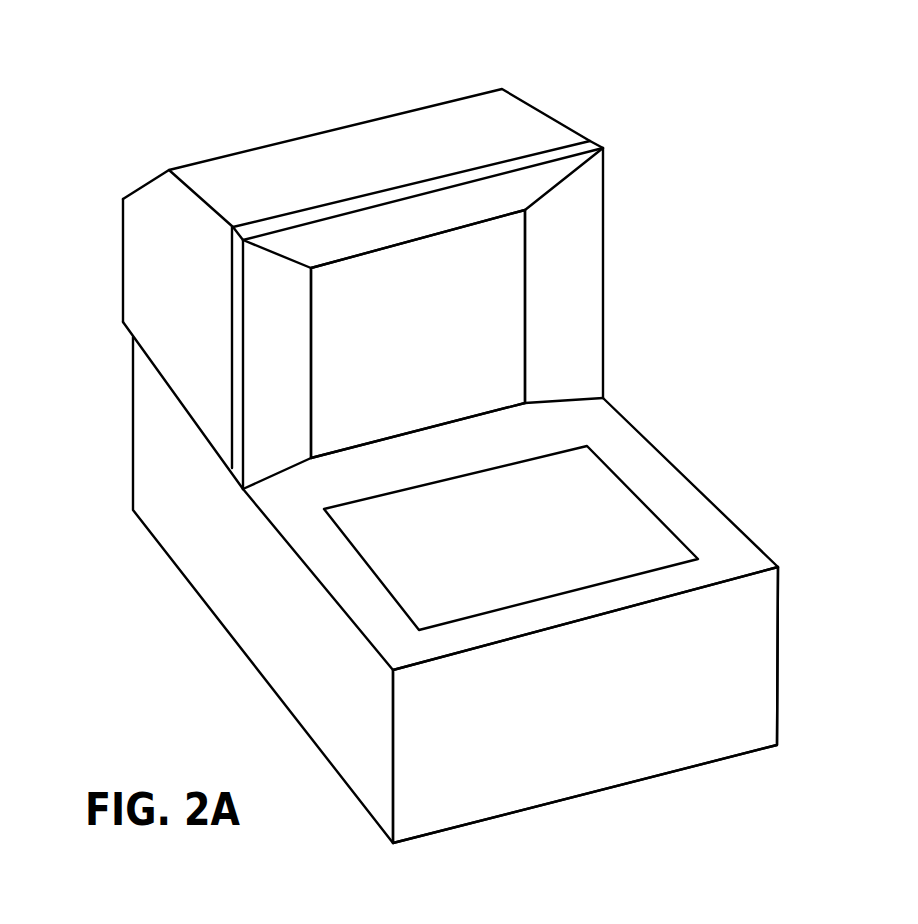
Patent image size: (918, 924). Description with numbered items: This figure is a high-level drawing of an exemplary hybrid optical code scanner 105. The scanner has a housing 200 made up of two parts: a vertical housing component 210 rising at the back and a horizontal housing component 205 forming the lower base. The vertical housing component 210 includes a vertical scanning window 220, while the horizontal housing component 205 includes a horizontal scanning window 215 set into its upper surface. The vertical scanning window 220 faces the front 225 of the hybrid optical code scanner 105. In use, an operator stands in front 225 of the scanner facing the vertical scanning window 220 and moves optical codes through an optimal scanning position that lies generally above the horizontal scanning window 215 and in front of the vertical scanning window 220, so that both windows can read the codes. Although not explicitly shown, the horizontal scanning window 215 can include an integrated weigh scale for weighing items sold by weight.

The hybrid optical code scanner 105 is at (157, 58).
The housing 200 is at (152, 458).
The horizontal housing component 205 is at (649, 472).
The vertical housing component 210 is at (517, 122).
The horizontal scanning window 215 is at (657, 538).
The vertical scanning window 220 is at (475, 287).
The front 225 is at (580, 677).